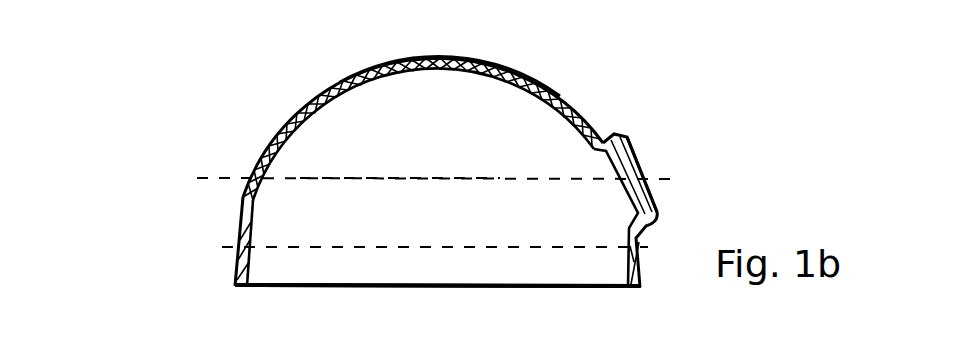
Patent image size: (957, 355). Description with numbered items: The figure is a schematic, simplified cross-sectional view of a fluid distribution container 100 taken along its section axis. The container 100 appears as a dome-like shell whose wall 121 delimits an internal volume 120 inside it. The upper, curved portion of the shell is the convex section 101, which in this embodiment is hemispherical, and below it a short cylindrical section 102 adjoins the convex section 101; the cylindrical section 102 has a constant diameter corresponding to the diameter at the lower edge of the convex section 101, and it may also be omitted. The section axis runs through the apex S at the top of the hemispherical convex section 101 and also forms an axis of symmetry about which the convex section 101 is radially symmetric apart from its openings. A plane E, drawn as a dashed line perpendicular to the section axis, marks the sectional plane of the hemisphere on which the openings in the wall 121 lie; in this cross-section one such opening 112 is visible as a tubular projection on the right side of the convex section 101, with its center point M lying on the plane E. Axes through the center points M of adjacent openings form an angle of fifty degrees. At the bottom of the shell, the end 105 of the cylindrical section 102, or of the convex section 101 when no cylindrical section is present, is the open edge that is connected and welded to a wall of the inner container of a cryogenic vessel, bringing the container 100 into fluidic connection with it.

The fluid distribution container 100 is at (150, 92).
The internal volume 120 is at (465, 87).
The wall 121 is at (544, 89).
The opening 112 is at (626, 141).
The convex section 101 is at (240, 200).
The cylindrical section 102 is at (230, 262).
The end 105 is at (290, 305).
The apex S is at (436, 58).
The plane E is at (383, 178).
The center point M is at (637, 165).